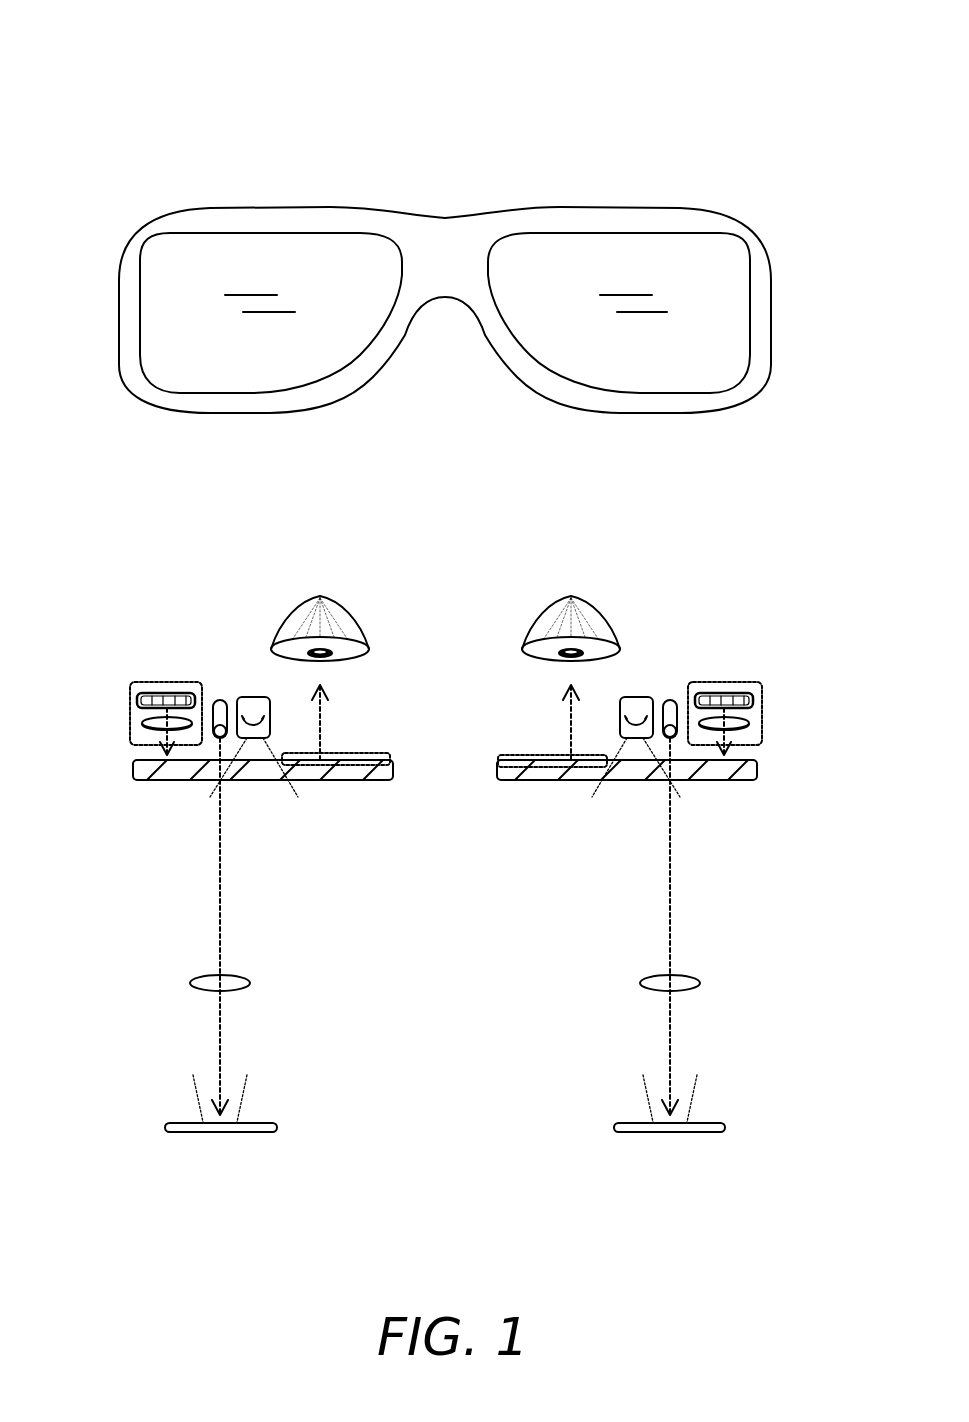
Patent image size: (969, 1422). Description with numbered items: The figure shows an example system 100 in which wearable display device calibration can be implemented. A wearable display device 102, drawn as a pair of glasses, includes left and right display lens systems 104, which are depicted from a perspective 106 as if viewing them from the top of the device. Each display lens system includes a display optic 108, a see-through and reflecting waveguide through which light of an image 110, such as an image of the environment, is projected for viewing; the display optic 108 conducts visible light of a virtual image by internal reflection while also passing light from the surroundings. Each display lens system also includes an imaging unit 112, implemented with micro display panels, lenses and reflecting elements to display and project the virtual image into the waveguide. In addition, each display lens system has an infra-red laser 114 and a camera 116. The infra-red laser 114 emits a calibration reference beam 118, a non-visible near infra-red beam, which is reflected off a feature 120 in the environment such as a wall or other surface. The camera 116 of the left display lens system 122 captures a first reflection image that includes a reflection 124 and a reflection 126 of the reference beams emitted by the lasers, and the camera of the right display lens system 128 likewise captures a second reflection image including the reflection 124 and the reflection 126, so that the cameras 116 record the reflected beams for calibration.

The system 100 is at (748, 64).
The wearable display device 102 is at (475, 166).
The display lens systems 104 is at (495, 550).
The perspective 106 is at (269, 176).
The display optic 108 is at (177, 782).
The image 110 is at (372, 757).
The imaging unit 112 is at (153, 680).
The infra-red laser 114 is at (220, 698).
The camera 116 is at (248, 697).
The calibration reference beam 118 is at (200, 975).
The feature 120 is at (255, 1133).
The left display lens system 122 is at (602, 890).
The reflection 124 is at (690, 1103).
The reflection 126 is at (198, 1103).
The right display lens system 128 is at (290, 852).